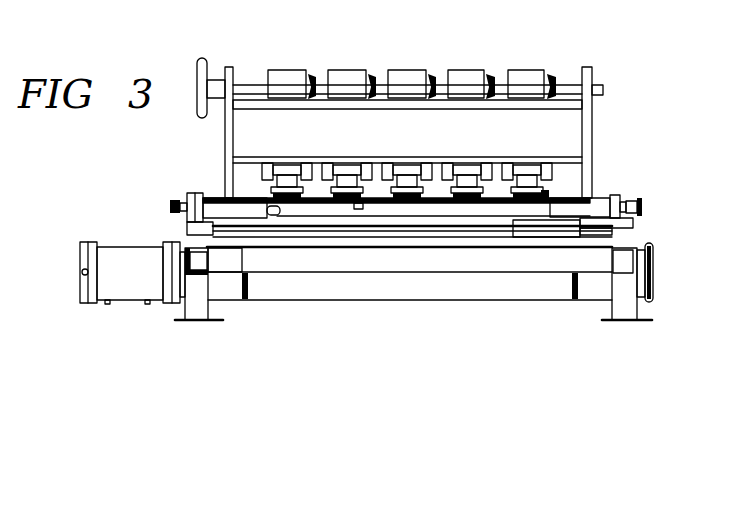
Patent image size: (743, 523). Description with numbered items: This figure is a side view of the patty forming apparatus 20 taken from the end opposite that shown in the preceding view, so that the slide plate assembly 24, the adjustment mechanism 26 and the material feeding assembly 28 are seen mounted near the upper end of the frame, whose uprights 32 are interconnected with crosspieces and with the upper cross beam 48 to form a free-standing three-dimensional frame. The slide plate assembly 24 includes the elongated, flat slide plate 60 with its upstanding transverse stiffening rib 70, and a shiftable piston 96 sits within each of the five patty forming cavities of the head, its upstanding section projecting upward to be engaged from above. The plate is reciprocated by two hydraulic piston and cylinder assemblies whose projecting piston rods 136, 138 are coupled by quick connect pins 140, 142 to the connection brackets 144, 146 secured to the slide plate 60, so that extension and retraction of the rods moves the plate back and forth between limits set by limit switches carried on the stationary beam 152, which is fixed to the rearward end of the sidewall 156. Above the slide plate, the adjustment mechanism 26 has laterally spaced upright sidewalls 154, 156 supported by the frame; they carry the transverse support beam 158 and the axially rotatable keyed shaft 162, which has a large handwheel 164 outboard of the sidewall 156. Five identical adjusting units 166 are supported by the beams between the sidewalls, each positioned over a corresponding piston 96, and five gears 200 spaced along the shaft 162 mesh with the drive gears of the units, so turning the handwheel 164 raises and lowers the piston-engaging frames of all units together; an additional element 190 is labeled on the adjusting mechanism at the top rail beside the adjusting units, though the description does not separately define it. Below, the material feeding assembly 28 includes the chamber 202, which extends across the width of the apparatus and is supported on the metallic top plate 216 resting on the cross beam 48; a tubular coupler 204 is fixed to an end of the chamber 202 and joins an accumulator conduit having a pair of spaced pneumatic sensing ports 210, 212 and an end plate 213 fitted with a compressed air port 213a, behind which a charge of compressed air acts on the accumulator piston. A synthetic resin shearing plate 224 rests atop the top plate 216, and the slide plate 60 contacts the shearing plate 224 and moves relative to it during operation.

The patty forming apparatus 20 is at (132, 144).
The slide plate assembly 24 is at (572, 183).
The adjustment mechanism 26 is at (238, 46).
The material feeding assembly 28 is at (412, 300).
The uprights 32 is at (198, 308).
The upper cross beam 48 is at (528, 260).
The slide plate 60 is at (450, 228).
The stiffening rib 70 is at (392, 217).
The shiftable piston 96 is at (348, 180).
The piston rod 136 is at (615, 195).
The piston rod 138 is at (203, 196).
The quick connect pin 140 is at (643, 207).
The quick connect pin 142 is at (174, 205).
The connection bracket 144 is at (537, 217).
The connection bracket 146 is at (258, 207).
The stationary beam 152 is at (225, 180).
The sidewall 154 is at (588, 120).
The sidewall 156 is at (226, 142).
The support beam 158 is at (558, 130).
The keyed shaft 162 is at (248, 88).
The handwheel 164 is at (197, 101).
The adjusting unit 166 is at (448, 58).
The guide block 190 is at (476, 70).
The gear 200 is at (432, 44).
The chamber 202 is at (305, 302).
The tubular coupler 204 is at (652, 262).
The pneumatic sensing port 210 is at (148, 304).
The pneumatic sensing port 212 is at (108, 304).
The end plate 213 is at (88, 304).
The compressed air port 213a is at (80, 272).
The top plate 216 is at (373, 245).
The shearing plate 224 is at (507, 244).